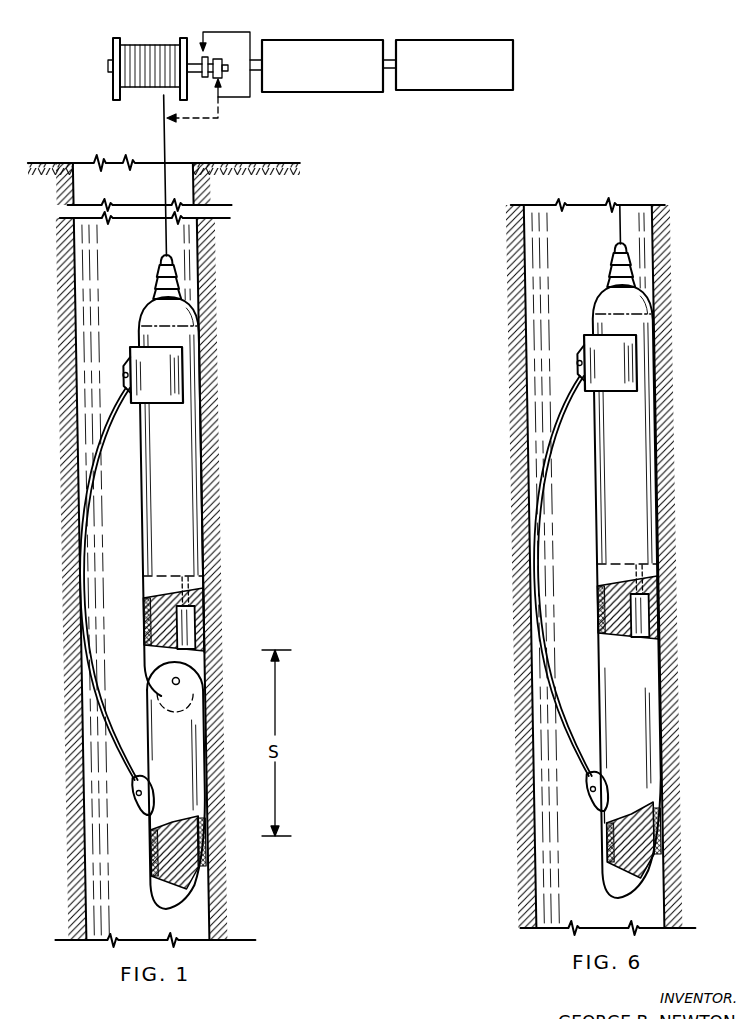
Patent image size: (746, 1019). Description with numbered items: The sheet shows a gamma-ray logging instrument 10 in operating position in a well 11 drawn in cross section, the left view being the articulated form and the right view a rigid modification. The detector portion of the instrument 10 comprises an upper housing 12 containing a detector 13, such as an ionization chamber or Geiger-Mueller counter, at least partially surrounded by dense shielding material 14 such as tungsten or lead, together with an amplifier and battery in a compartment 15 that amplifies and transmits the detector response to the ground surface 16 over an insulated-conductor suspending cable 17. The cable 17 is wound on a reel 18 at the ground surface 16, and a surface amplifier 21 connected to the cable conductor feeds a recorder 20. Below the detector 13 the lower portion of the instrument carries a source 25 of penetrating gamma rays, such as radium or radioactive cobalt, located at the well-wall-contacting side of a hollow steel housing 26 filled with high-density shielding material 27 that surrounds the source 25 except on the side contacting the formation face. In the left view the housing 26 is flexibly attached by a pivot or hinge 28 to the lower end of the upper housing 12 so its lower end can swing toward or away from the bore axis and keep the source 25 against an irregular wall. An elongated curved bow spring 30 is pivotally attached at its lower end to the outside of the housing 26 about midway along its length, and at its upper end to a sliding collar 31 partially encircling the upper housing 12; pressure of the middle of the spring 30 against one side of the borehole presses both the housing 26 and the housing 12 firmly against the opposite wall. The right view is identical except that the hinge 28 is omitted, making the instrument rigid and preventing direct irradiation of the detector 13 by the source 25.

In FIG. 1, the logging instrument 10 is at (219, 488).
In FIG. 6, the logging instrument 10 is at (681, 513).
In FIG. 1, the well 11 is at (79, 300).
In FIG. 6, the well 11 is at (527, 286).
In FIG. 1, the upper housing 12 is at (137, 478).
In FIG. 1, the detector 13 is at (191, 626).
In FIG. 6, the detector 13 is at (648, 626).
In FIG. 1, the shielding material 14 is at (154, 612).
In FIG. 6, the shielding material 14 is at (612, 605).
In FIG. 1, the compartment 15 is at (195, 440).
In FIG. 6, the compartment 15 is at (643, 474).
In FIG. 1, the ground surface 16 is at (60, 161).
In FIG. 1, the suspending cable 17 is at (163, 185).
In FIG. 6, the suspending cable 17 is at (619, 227).
In FIG. 1, the reel 18 is at (113, 41).
In FIG. 1, the recorder 20 is at (462, 44).
In FIG. 1, the surface amplifier 21 is at (334, 44).
In FIG. 1, the source 25 is at (206, 846).
In FIG. 6, the source 25 is at (660, 830).
In FIG. 1, the housing 26 is at (192, 766).
In FIG. 1, the shielding material 27 is at (165, 852).
In FIG. 6, the shielding material 27 is at (622, 845).
In FIG. 1, the pivot or hinge 28 is at (181, 681).
In FIG. 1, the bow spring 30 is at (99, 718).
In FIG. 6, the bow spring 30 is at (551, 698).
In FIG. 1, the sliding collar 31 is at (176, 371).
In FIG. 6, the sliding collar 31 is at (631, 355).